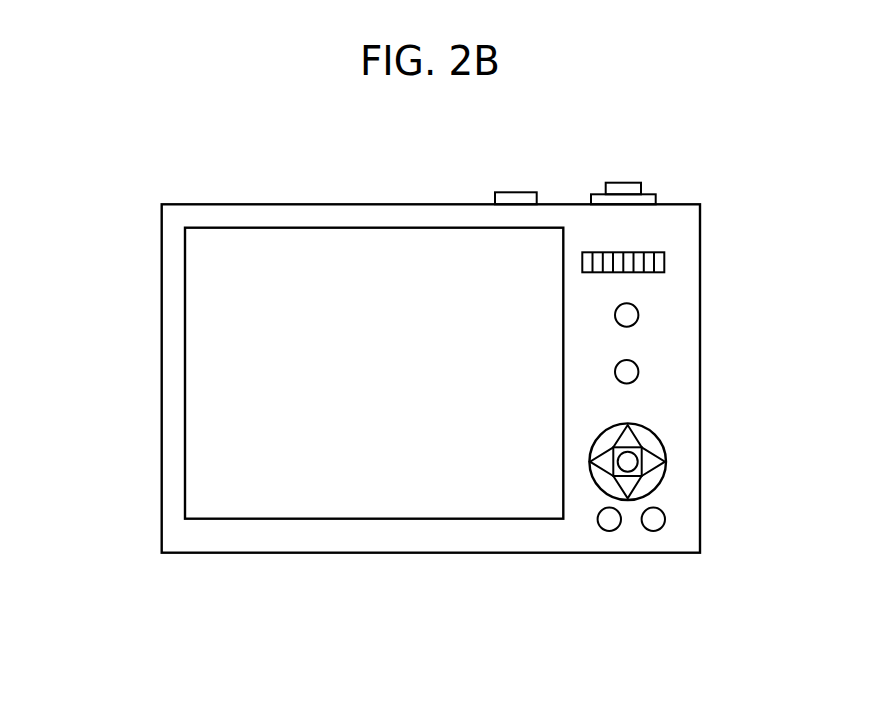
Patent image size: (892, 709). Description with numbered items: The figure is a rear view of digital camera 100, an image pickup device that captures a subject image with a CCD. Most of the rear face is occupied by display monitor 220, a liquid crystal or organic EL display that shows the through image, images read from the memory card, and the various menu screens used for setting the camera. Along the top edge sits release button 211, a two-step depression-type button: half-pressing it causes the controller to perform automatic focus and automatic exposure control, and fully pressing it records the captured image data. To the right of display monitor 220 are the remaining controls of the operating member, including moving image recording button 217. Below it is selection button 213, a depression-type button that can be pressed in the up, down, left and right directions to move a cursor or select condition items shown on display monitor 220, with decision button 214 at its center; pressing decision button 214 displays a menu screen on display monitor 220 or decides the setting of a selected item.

The digital camera 100 is at (116, 594).
The release button 211 is at (623, 183).
The selection button 213 is at (654, 472).
The decision button 214 is at (633, 457).
The moving image recording button 217 is at (638, 315).
The display monitor 220 is at (185, 349).